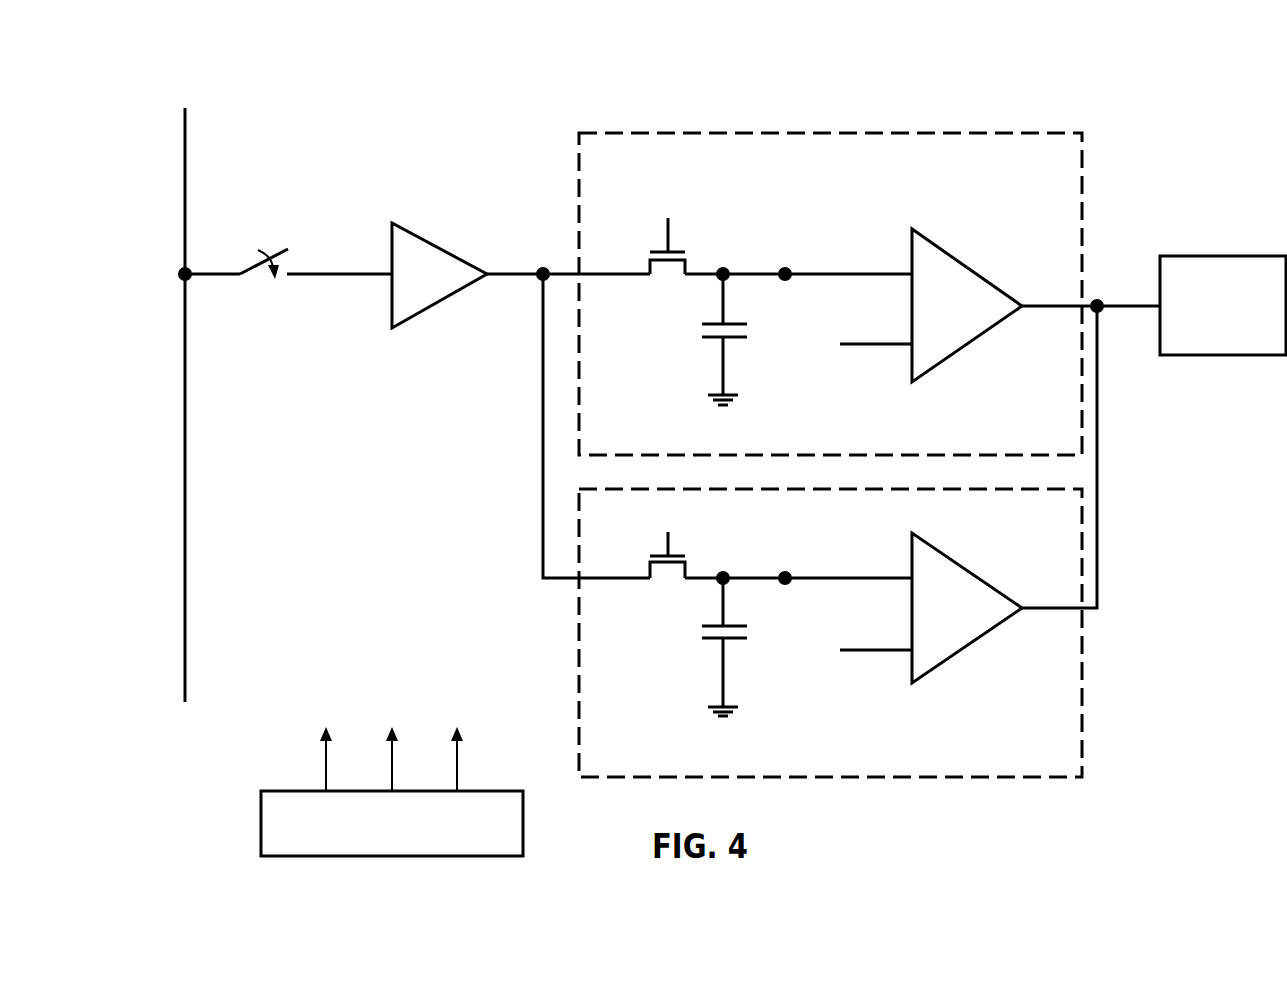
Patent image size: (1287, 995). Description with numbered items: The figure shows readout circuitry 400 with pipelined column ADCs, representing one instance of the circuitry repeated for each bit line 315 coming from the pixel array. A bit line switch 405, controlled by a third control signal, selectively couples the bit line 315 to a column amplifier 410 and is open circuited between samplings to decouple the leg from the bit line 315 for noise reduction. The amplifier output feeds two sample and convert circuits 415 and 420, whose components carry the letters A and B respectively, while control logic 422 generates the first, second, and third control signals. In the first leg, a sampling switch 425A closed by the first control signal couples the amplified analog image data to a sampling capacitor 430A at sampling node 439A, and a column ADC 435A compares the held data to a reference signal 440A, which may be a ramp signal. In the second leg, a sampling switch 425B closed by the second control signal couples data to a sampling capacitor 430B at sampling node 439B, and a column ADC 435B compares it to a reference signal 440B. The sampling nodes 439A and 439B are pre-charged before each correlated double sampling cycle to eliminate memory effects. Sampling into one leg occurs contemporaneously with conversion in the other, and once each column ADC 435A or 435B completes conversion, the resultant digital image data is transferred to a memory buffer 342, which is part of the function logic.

The readout circuitry 400 is at (1147, 94).
The bit line 315 is at (200, 405).
The bit line switch 405 is at (288, 277).
The column amplifier 410 is at (410, 287).
The sample and convert circuit 415 is at (1015, 169).
The sample and convert circuit 420 is at (1067, 524).
The control logic 422 is at (477, 835).
The sampling switch 425A is at (667, 250).
The sampling switch 425B is at (667, 556).
The sampling capacitor 430A is at (702, 339).
The sampling capacitor 430B is at (702, 647).
The column ADC 435A is at (930, 331).
The column ADC 435B is at (930, 633).
The sampling node 439A is at (785, 292).
The sampling node 439B is at (785, 596).
The reference signal 440A is at (863, 364).
The reference signal 440B is at (863, 664).
The memory buffer 342 is at (1277, 328).